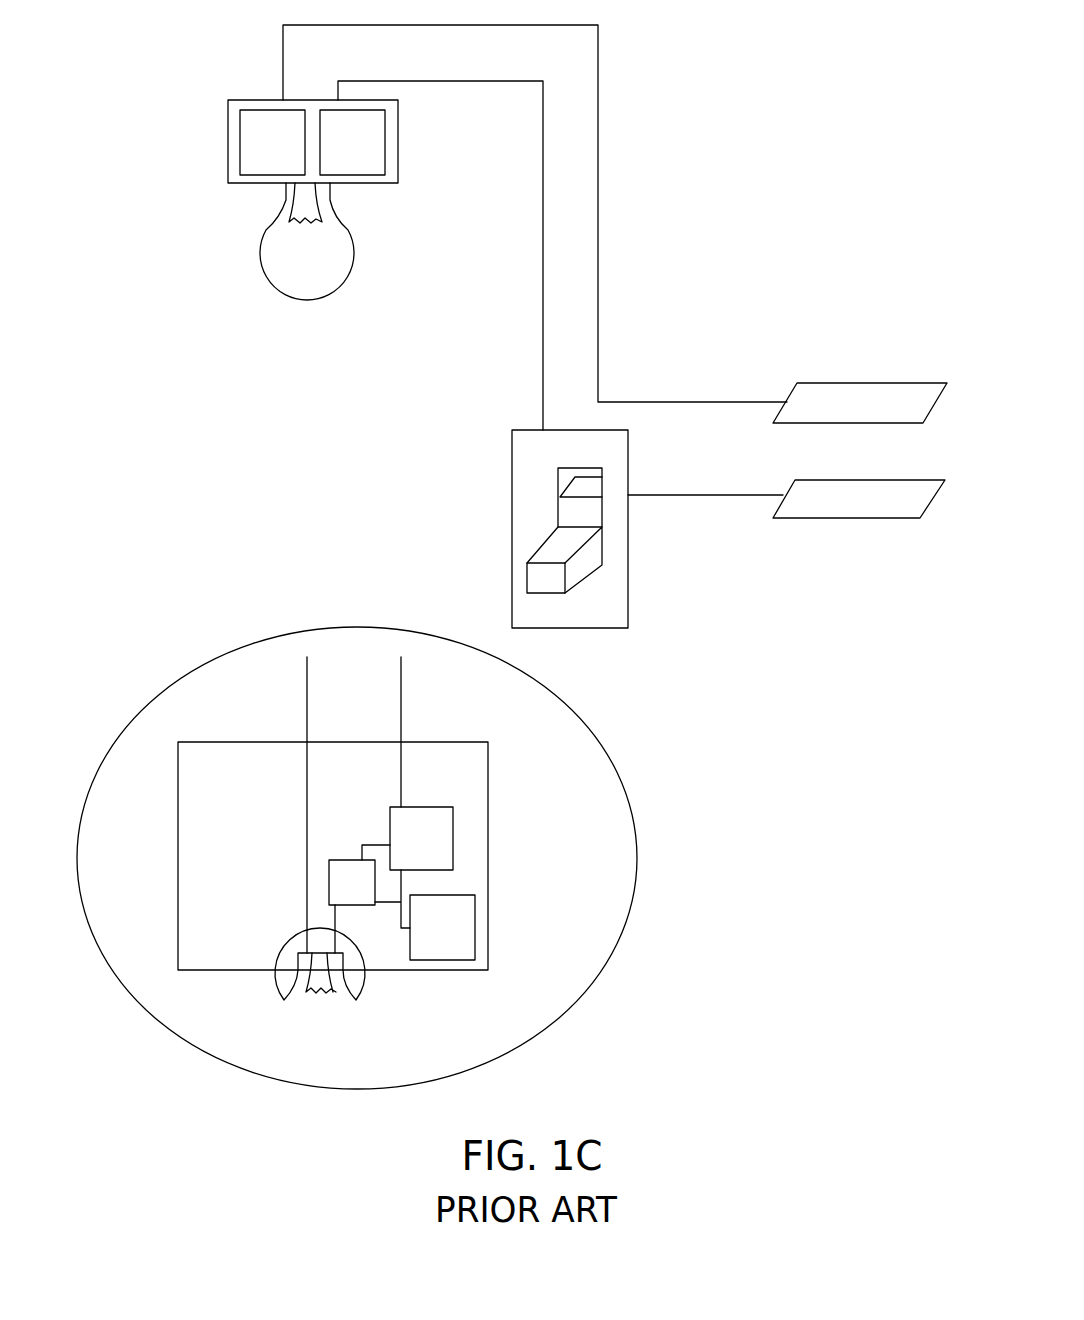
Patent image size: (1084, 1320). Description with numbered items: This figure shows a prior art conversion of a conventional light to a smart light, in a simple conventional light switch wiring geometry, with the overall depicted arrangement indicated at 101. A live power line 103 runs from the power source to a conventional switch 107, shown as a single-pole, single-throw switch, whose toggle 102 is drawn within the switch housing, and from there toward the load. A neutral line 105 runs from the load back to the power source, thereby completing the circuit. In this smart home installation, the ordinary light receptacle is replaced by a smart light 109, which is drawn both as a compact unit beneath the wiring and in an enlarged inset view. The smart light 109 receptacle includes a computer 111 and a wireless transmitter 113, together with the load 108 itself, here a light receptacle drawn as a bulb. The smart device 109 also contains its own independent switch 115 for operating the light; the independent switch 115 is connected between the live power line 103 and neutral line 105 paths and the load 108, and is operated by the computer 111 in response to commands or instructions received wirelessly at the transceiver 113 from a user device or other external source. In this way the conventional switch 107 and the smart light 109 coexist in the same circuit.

The prior art lighting control system 101 is at (182, 386).
The switch toggle actuator 102 is at (552, 575).
The live power line 103 is at (716, 497).
The neutral line 105 is at (716, 402).
The conventional switch 107 is at (512, 497).
The load 108 is at (323, 300).
The smart light 109 is at (228, 112).
The computer 111 is at (385, 148).
The wireless transmitter 113 is at (240, 160).
The independent switch 115 is at (348, 860).